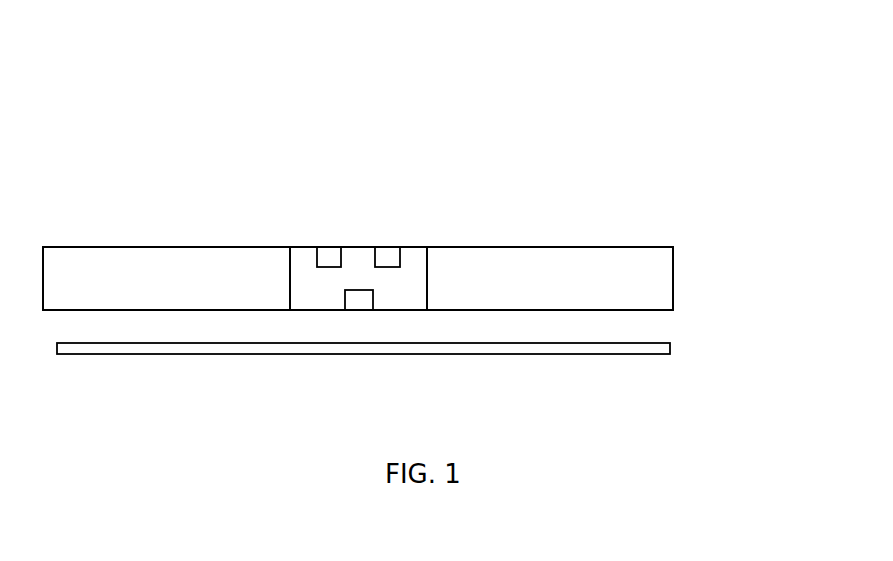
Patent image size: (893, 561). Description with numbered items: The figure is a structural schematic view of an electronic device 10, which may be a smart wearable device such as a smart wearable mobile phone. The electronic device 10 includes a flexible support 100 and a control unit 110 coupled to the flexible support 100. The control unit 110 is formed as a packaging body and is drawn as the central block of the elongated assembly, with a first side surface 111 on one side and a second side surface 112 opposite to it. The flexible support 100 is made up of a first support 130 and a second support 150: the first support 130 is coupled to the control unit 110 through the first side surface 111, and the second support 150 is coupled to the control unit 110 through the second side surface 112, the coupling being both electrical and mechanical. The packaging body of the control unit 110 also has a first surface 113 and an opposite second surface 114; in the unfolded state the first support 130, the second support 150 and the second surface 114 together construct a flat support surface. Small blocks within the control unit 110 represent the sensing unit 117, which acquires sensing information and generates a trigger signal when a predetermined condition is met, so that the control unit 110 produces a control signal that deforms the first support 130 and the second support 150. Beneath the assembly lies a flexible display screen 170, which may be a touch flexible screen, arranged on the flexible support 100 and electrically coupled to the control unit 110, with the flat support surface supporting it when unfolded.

The electronic device 10 is at (402, 40).
The flexible support 100 is at (659, 280).
The control unit 110 is at (418, 262).
The first side surface 111 is at (286, 270).
The second side surface 112 is at (431, 280).
The first surface 113 is at (303, 245).
The second surface 114 is at (396, 313).
The sensing unit 117 is at (320, 258).
The first support 130 is at (140, 258).
The second support 150 is at (587, 260).
The flexible display screen 170 is at (647, 347).